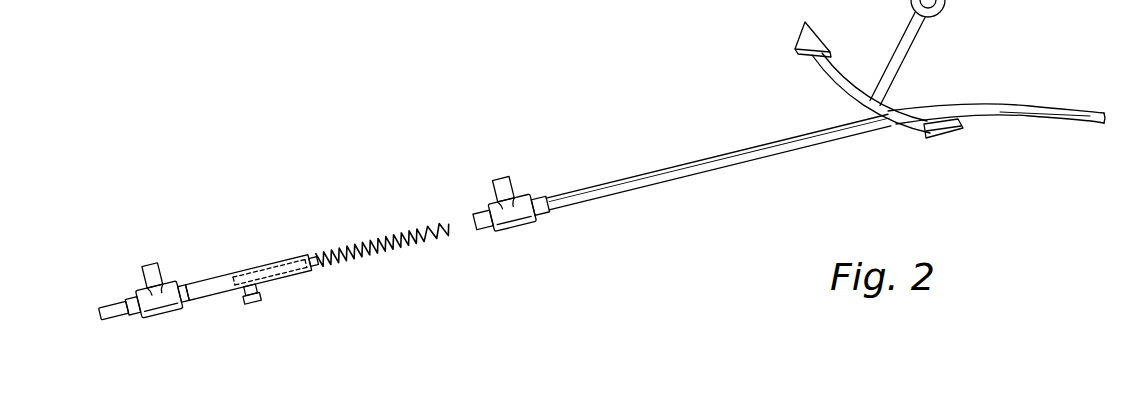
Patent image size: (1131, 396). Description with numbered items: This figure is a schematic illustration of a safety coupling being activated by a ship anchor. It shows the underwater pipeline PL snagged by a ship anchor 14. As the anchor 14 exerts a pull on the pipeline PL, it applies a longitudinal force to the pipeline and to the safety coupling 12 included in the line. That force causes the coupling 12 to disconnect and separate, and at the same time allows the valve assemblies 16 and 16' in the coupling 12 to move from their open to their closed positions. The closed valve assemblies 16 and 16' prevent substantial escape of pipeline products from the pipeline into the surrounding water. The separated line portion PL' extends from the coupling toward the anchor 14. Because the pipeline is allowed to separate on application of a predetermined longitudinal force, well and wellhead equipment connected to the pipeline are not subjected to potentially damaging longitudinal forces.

The safety coupling 12 is at (104, 236).
The ship anchor 14 is at (890, 52).
The valve assembly 16 is at (165, 283).
The valve assembly 16' is at (514, 195).
The pipeline PL is at (116, 333).
The pull line extension PL' is at (718, 162).